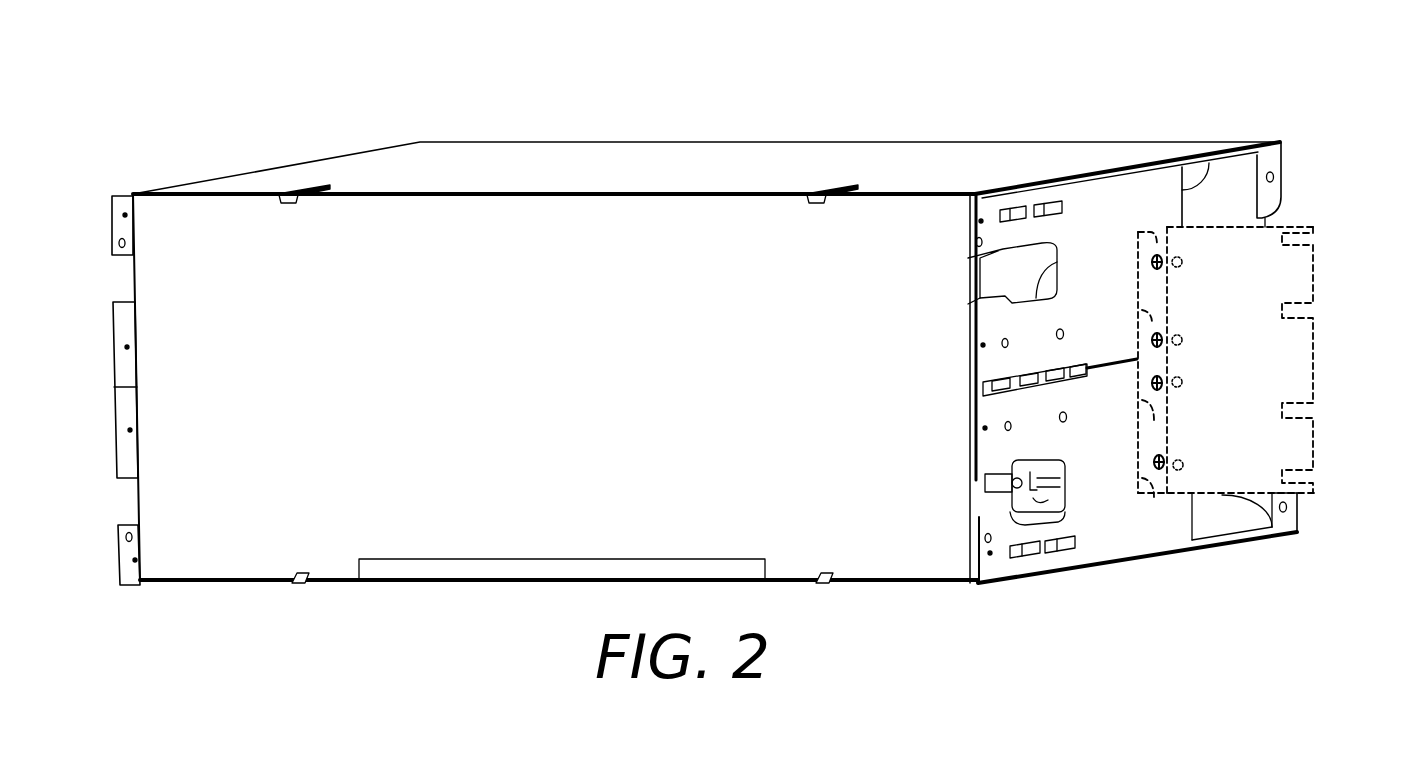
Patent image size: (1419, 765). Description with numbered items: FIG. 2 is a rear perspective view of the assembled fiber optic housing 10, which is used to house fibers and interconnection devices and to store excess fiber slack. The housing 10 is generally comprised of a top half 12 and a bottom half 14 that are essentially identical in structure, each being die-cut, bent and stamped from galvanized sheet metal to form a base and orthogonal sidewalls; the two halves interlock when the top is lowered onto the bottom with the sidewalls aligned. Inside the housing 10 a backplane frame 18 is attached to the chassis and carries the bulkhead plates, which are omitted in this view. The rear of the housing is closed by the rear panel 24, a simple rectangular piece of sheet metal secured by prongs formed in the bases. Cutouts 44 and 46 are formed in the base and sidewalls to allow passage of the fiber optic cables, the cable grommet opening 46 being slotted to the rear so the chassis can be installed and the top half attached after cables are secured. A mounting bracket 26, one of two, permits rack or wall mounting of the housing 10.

The fiber optic housing 10 is at (236, 135).
The top half 12 is at (734, 156).
The bottom half 14 is at (1122, 530).
The backplane frame 18 is at (1040, 500).
The rear panel 24 is at (160, 280).
The mounting bracket 26 is at (1315, 342).
The cutout 44 is at (1209, 163).
The cable grommet opening 46 is at (1058, 260).